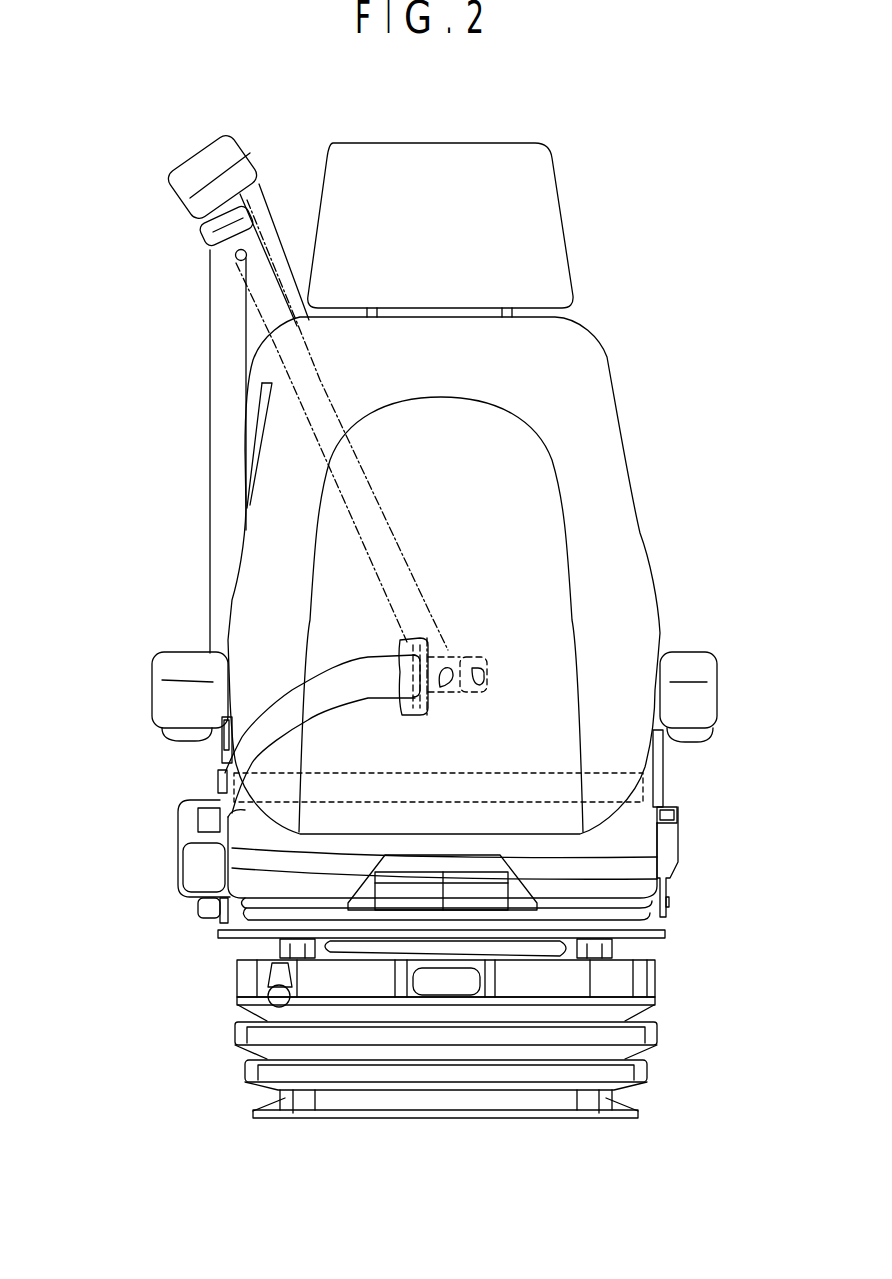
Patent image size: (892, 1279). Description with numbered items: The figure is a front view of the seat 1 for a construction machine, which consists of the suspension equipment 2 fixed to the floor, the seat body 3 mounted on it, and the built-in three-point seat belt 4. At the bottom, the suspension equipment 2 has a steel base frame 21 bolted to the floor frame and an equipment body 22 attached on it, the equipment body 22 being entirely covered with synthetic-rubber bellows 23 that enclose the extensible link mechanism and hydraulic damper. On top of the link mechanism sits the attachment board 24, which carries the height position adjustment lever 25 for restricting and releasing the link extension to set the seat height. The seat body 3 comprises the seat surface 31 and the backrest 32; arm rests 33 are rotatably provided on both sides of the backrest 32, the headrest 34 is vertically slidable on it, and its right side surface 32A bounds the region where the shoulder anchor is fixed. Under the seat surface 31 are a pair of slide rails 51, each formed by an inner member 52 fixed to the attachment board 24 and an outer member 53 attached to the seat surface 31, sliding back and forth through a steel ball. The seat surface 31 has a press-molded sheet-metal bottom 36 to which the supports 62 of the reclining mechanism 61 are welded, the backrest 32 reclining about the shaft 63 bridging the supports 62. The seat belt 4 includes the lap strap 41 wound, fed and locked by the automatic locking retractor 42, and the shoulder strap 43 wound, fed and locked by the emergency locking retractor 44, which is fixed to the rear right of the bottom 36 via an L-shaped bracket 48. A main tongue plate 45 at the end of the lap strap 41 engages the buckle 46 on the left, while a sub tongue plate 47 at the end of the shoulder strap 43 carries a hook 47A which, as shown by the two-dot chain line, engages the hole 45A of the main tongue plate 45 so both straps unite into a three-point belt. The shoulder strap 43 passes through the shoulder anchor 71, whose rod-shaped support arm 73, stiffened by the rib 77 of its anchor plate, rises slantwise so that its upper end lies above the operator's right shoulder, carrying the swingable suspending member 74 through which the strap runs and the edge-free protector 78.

The seat 1 is at (603, 108).
The suspension equipment 2 is at (683, 1040).
The seat body 3 is at (660, 485).
The three-point seat belt 4 is at (178, 326).
The base frame 21 is at (505, 1120).
The equipment body 22 is at (632, 1086).
The bellows 23 is at (445, 1101).
The attachment board 24 is at (650, 988).
The height position adjustment lever 25 is at (470, 985).
The seat surface 31 is at (635, 866).
The backrest 32 is at (625, 568).
The right side surface 32A is at (256, 440).
The arm rests 33 is at (180, 660).
The headrest 34 is at (440, 160).
The bottom 36 is at (650, 920).
The lap strap 41 is at (335, 705).
The automatic locking retractor 42 is at (190, 830).
The shoulder strap 43 is at (272, 362).
The emergency locking retractor 44 is at (206, 905).
The main tongue plate 45 is at (470, 660).
The hole 45A is at (448, 688).
The buckle 46 is at (672, 830).
The sub tongue plate 47 is at (215, 252).
The hook 47A is at (234, 259).
The L-shaped bracket 48 is at (222, 940).
The slide rails 51 is at (143, 1002).
The inner member 52 is at (300, 985).
The outer member 53 is at (285, 945).
The reclining mechanism 61 is at (683, 765).
The supports 62 is at (222, 752).
The shaft 63 is at (663, 790).
The shoulder anchor 71 is at (275, 168).
The support arm 73 is at (278, 257).
The suspending member 74 is at (190, 232).
The rib 77 is at (260, 402).
The protector 78 is at (203, 158).